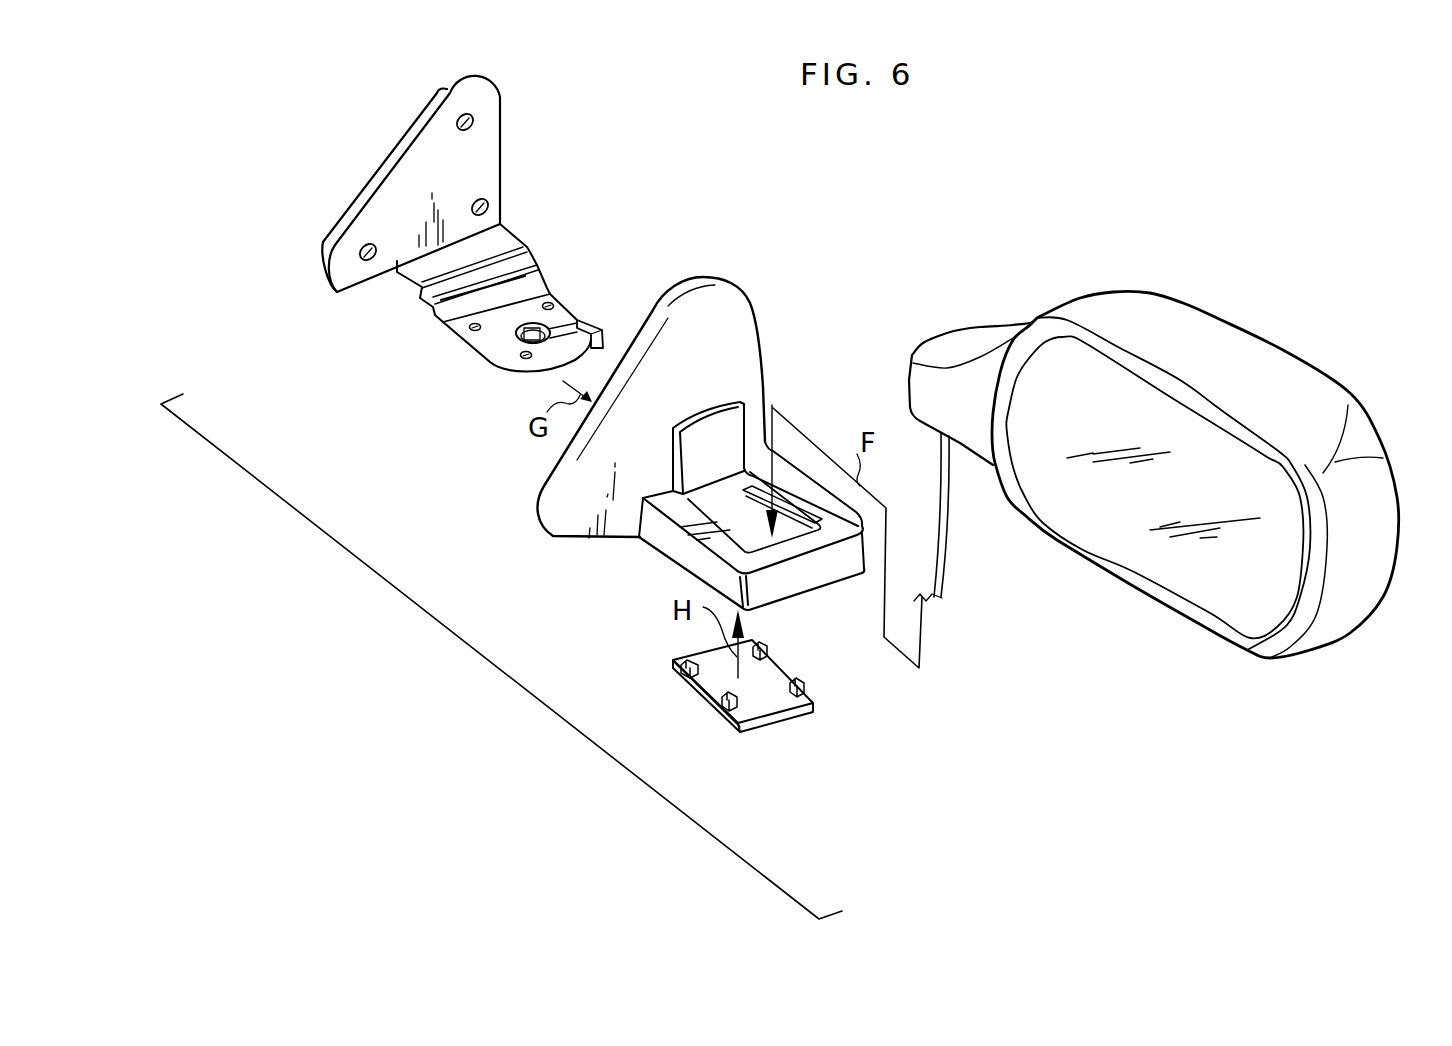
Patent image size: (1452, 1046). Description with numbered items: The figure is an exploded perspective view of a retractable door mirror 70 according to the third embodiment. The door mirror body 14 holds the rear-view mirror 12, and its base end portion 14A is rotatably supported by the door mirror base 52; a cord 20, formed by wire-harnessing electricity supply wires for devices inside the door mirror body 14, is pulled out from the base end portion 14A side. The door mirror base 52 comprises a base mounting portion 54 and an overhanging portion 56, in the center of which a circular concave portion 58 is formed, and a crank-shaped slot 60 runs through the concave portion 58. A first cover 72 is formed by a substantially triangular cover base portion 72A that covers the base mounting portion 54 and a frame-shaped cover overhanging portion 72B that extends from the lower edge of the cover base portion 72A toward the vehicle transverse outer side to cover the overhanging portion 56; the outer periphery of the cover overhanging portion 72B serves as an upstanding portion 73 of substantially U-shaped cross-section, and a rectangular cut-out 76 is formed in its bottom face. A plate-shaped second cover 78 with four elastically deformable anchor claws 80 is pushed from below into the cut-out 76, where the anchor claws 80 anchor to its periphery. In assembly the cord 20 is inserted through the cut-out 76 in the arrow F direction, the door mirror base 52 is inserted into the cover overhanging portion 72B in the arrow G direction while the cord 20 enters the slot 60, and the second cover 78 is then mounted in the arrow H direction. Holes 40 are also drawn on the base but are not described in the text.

The rear-view mirror 12 is at (1133, 560).
The door mirror body 14 is at (1141, 469).
The base end portion 14A is at (935, 355).
The cord 20 is at (945, 517).
The screw holes 40 is at (553, 305).
The door mirror base 52 is at (484, 249).
The base mounting portion 54 is at (500, 183).
The overhanging portion 56 is at (513, 233).
The concave portion 58 is at (473, 347).
The slot 60 is at (585, 323).
The retractable door mirror 70 is at (1141, 420).
The first cover 72 is at (679, 469).
The cover base portion 72A is at (582, 542).
The cover overhanging portion 72B is at (709, 531).
The upstanding portion 73 is at (833, 567).
The cut-out 76 is at (745, 533).
The second cover 78 is at (732, 699).
The anchor claws 80 is at (724, 706).